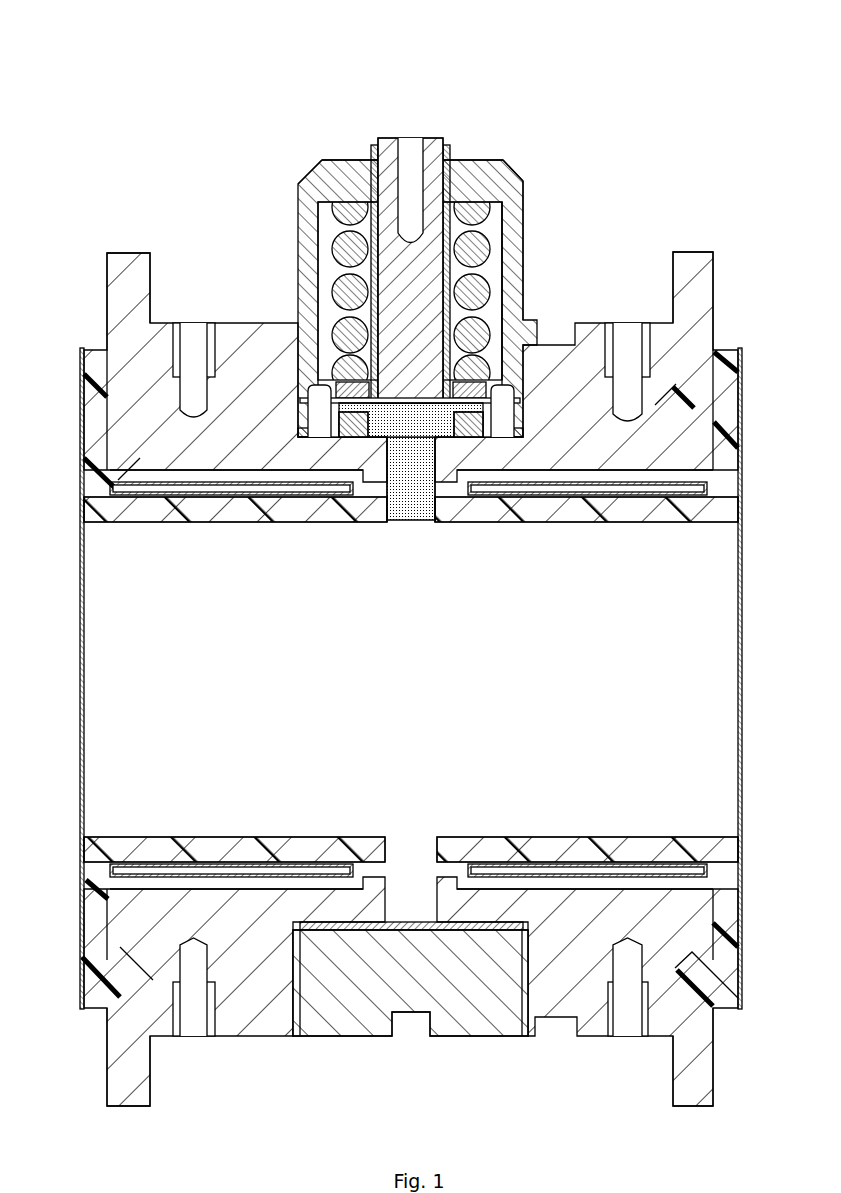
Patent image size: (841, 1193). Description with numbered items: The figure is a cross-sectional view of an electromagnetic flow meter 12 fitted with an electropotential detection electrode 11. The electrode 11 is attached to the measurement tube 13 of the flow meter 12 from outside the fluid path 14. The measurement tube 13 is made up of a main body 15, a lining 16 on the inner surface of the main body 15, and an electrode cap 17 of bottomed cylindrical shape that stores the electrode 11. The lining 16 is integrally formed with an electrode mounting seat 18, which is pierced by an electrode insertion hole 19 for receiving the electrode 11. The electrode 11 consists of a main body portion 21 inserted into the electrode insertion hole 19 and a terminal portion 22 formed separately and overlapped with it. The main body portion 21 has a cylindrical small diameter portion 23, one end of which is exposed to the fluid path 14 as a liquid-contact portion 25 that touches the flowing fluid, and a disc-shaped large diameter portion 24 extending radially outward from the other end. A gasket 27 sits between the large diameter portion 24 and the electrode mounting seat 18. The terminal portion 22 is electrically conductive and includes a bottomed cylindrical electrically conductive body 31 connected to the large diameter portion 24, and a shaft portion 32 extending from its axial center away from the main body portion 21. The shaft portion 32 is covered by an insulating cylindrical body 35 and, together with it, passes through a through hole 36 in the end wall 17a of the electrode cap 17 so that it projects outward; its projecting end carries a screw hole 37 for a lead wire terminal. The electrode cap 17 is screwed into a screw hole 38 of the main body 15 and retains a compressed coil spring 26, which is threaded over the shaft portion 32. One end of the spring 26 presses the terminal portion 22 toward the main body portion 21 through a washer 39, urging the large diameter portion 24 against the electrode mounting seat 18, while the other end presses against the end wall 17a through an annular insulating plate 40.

The electropotential detection electrode 11 is at (410, 532).
The electromagnetic flow meter 12 is at (94, 92).
The measurement tube 13 is at (121, 245).
The fluid path 14 is at (127, 630).
The main body 15 is at (100, 338).
The lining 16 is at (95, 403).
The electrode cap 17 is at (298, 222).
The end wall 17a is at (352, 160).
The electrode mounting seat 18 is at (332, 445).
The electrode insertion hole 19 is at (421, 480).
The main body portion 21 is at (490, 611).
The terminal portion 22 is at (438, 140).
The small diameter portion 23 is at (462, 505).
The large diameter portion 24 is at (538, 412).
The liquid-contact portion 25 is at (397, 525).
The compressed coil spring 26 is at (492, 242).
The gasket 27 is at (347, 450).
The electrically conductive body 31 is at (303, 422).
The shaft portion 32 is at (412, 280).
The cylindrical body 35 is at (497, 187).
The through hole 36 is at (320, 175).
The screw hole 37 is at (410, 150).
The screw hole 38 is at (315, 350).
The washer 39 is at (506, 383).
The annular insulating plate 40 is at (512, 228).